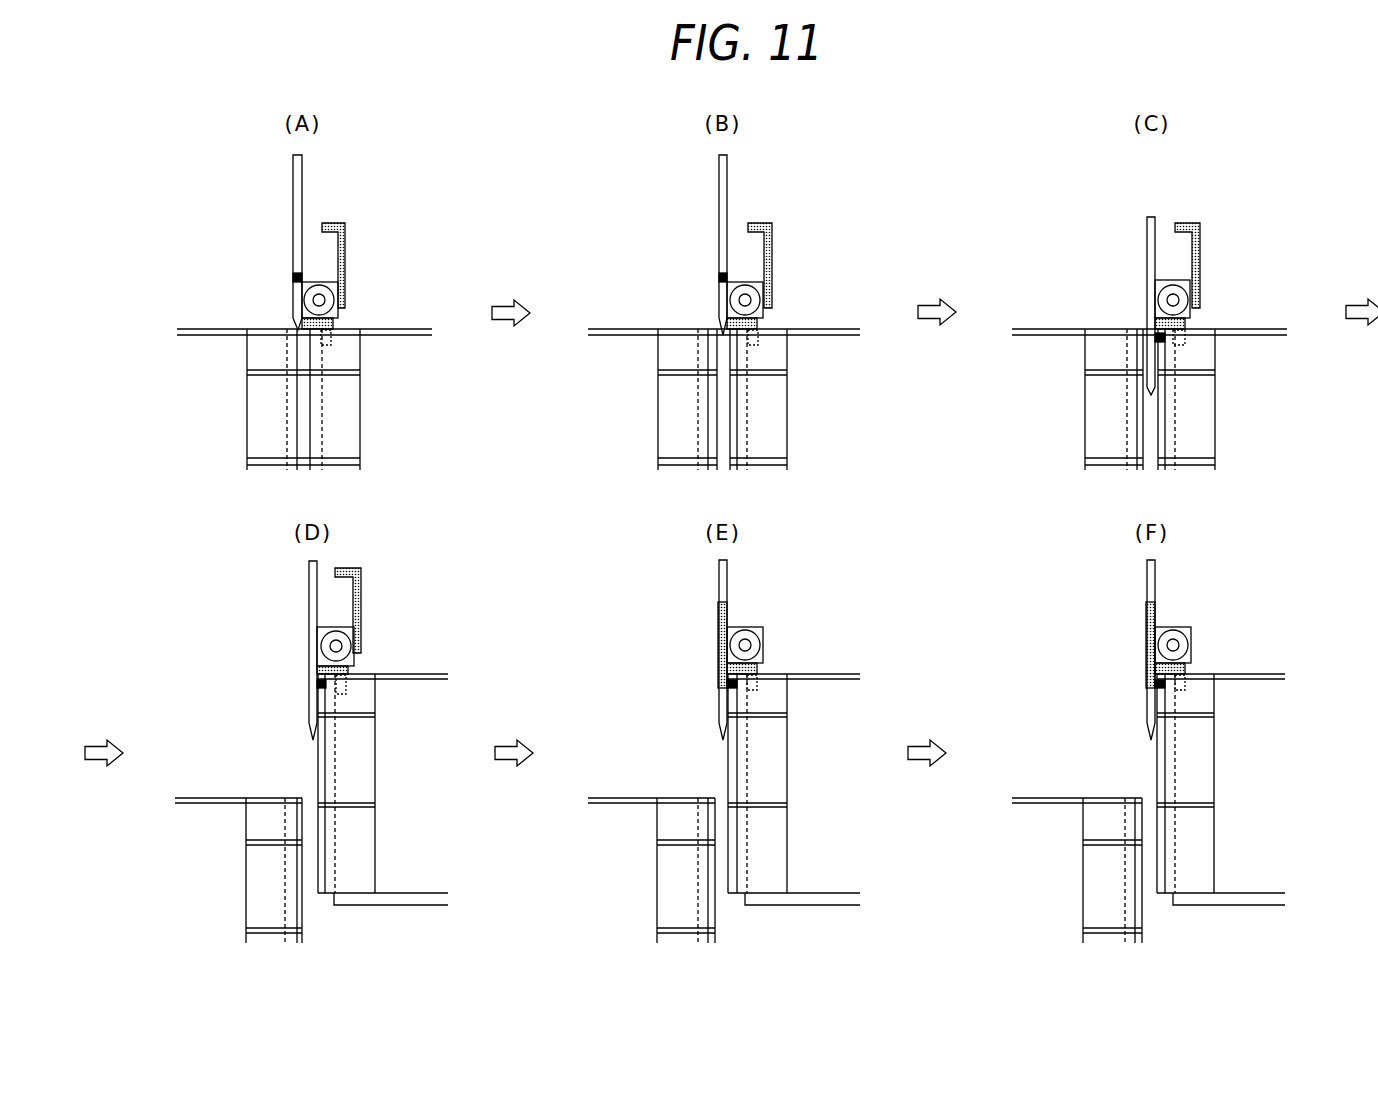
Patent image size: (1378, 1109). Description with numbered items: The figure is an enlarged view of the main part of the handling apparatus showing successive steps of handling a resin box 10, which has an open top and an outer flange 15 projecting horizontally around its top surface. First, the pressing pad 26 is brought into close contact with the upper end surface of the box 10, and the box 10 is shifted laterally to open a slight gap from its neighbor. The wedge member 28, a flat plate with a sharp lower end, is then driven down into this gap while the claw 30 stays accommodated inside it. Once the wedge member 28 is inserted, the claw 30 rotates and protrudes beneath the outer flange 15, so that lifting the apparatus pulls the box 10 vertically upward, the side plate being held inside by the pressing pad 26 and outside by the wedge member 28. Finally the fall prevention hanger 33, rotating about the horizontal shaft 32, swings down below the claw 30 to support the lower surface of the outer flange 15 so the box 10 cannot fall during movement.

The box 10 is at (185, 418).
The outer flange 15 is at (408, 329).
The pressing pad 26 is at (335, 323).
The wedge member 28 is at (293, 186).
The claw 30 is at (293, 277).
The horizontal shaft 32 is at (330, 646).
The fall prevention hanger 33 is at (345, 232).